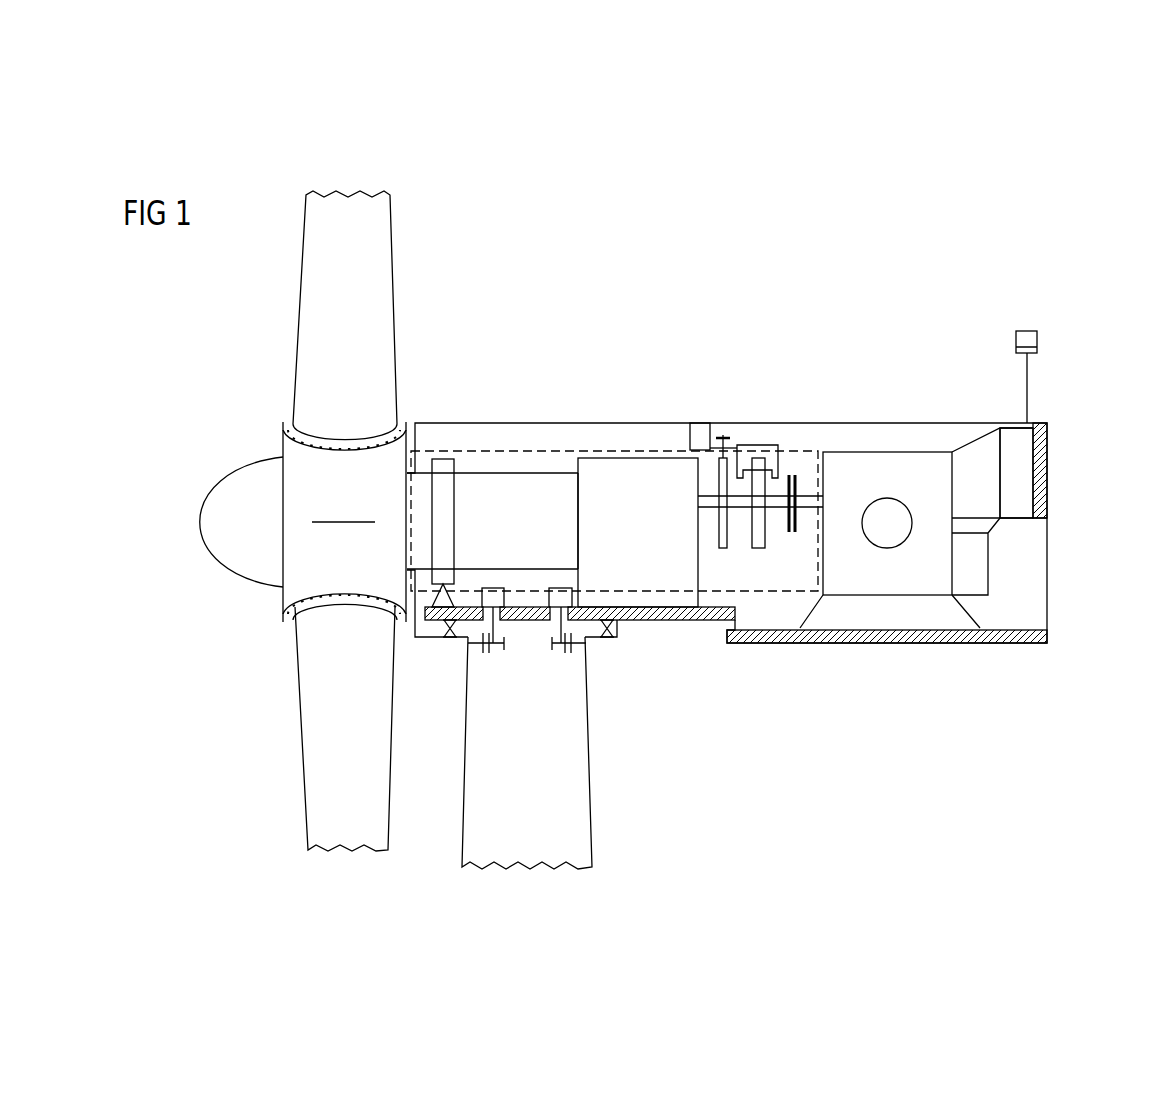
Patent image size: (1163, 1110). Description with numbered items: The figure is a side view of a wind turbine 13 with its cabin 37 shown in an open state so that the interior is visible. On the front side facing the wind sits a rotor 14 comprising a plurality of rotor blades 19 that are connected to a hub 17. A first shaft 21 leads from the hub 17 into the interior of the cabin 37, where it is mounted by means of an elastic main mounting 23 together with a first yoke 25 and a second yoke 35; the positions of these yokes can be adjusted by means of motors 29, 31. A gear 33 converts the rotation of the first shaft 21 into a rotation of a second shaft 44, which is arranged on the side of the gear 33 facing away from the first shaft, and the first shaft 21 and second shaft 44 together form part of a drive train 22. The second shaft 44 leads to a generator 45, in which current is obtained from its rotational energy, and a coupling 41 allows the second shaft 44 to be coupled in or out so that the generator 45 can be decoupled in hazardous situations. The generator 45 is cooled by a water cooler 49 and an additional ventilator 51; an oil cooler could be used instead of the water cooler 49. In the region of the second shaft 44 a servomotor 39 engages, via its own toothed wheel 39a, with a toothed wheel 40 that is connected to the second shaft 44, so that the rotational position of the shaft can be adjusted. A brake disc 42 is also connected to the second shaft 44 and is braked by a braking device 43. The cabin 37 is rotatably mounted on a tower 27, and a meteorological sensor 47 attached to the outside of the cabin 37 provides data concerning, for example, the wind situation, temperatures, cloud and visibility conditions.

The wind turbine 13 is at (1068, 456).
The rotor 14 is at (174, 530).
The hub 17 is at (290, 452).
The rotor blades 19 is at (307, 326).
The first shaft 21 is at (525, 482).
The drive train 22 is at (562, 450).
The elastic main mounting 23 is at (443, 465).
The first yoke 25 is at (497, 625).
The tower 27 is at (578, 770).
The motor 29 is at (494, 598).
The motor 31 is at (561, 598).
The gear 33 is at (637, 470).
The second yoke 35 is at (557, 626).
The cabin 37 is at (890, 646).
The servomotor 39 is at (703, 425).
The toothed wheel 39a is at (726, 440).
The toothed wheel 40 is at (716, 530).
The coupling 41 is at (793, 480).
The brake disc 42 is at (762, 530).
The braking device 43 is at (757, 445).
The second shaft 44 is at (742, 505).
The generator 45 is at (887, 457).
The meteorological sensor 47 is at (1015, 337).
The water cooler 49 is at (1017, 510).
The ventilator 51 is at (983, 580).